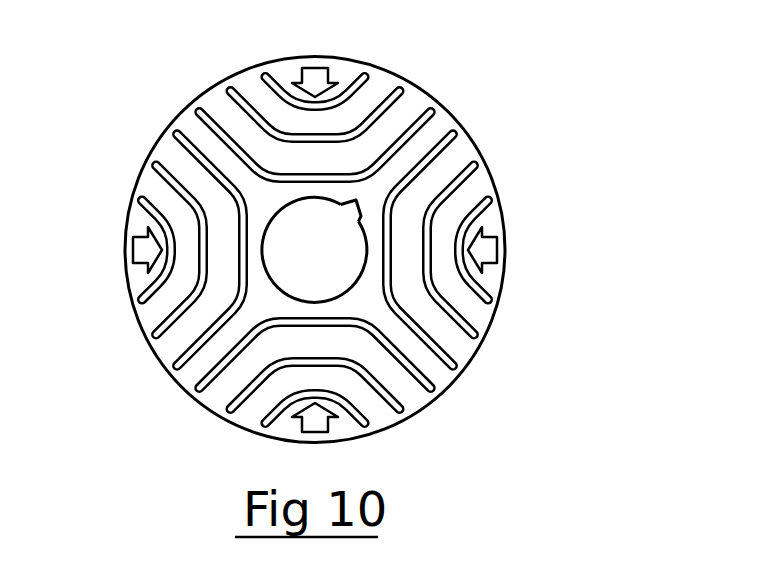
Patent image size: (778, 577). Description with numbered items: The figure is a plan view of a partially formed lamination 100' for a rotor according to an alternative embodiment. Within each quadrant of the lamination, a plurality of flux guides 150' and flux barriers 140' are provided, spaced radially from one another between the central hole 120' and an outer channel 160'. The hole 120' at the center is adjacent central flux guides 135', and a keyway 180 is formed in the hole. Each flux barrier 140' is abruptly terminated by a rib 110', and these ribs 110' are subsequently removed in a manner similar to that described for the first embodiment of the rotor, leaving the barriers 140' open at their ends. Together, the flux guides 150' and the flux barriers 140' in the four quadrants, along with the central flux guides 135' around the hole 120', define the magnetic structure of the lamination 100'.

The partially formed lamination 100' is at (350, 245).
The rib 110' is at (321, 250).
The central hole 120' is at (207, 306).
The central flux guides 135' is at (490, 90).
The flux barriers 140' is at (372, 250).
The flux guides 150' is at (507, 142).
The outer channel 160' is at (394, 250).
The keyway 180 is at (363, 218).